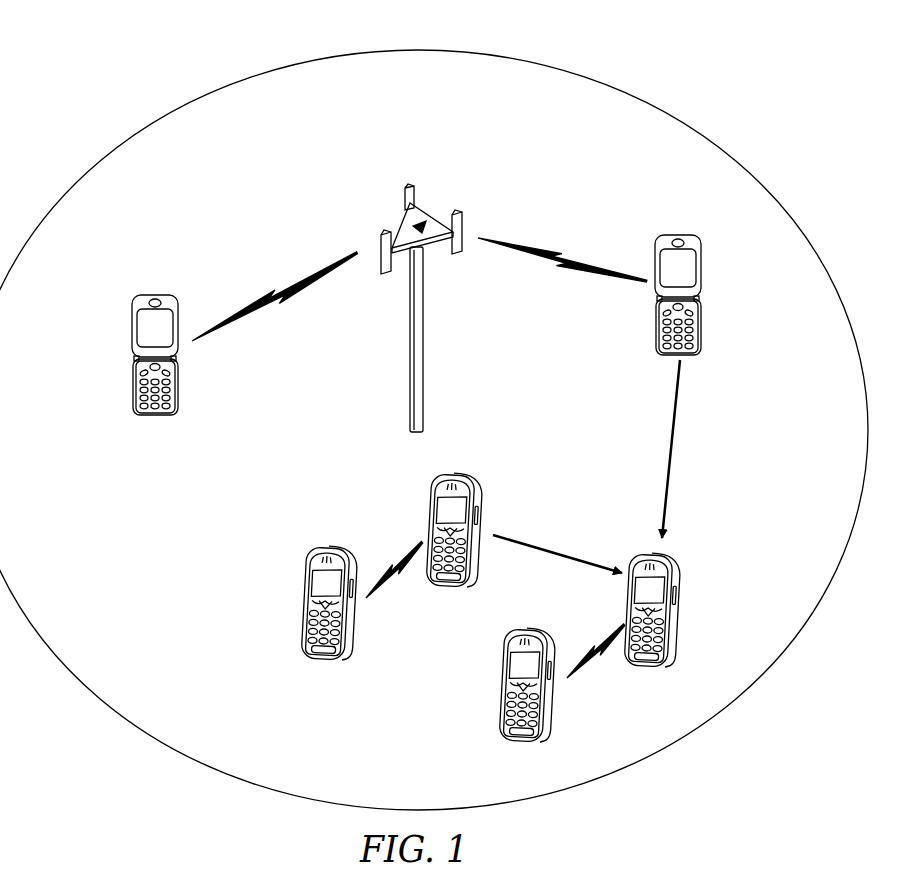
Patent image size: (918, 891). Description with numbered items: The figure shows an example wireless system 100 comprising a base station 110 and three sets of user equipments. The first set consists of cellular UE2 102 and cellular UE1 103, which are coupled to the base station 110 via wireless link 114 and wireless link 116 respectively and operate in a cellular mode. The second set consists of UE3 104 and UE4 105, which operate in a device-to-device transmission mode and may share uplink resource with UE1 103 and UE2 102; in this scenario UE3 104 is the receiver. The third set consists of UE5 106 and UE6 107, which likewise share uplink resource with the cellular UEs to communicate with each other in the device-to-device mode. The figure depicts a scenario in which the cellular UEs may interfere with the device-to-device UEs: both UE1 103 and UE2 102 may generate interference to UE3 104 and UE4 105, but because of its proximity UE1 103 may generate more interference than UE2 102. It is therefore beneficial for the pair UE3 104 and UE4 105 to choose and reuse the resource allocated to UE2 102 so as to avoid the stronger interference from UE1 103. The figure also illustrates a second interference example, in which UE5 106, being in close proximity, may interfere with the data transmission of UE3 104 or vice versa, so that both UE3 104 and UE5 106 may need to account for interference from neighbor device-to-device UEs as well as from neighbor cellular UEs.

The wireless system 100 is at (668, 75).
The cellular UE2 102 is at (155, 295).
The cellular UE1 103 is at (676, 235).
The UE3 104 is at (686, 625).
The UE4 105 is at (560, 697).
The UE5 106 is at (430, 512).
The UE6 107 is at (305, 590).
The base station 110 is at (410, 343).
The wireless link 114 is at (322, 272).
The wireless link 116 is at (520, 250).